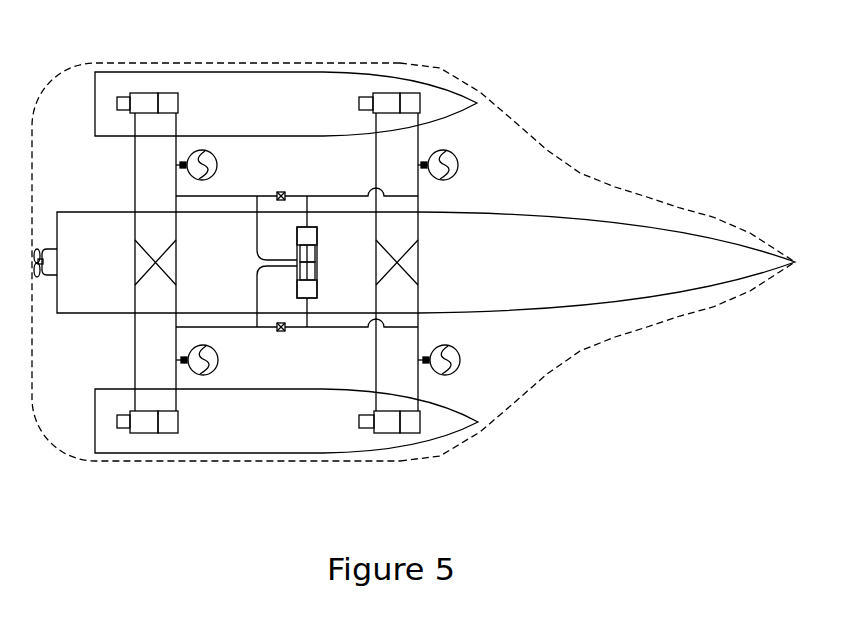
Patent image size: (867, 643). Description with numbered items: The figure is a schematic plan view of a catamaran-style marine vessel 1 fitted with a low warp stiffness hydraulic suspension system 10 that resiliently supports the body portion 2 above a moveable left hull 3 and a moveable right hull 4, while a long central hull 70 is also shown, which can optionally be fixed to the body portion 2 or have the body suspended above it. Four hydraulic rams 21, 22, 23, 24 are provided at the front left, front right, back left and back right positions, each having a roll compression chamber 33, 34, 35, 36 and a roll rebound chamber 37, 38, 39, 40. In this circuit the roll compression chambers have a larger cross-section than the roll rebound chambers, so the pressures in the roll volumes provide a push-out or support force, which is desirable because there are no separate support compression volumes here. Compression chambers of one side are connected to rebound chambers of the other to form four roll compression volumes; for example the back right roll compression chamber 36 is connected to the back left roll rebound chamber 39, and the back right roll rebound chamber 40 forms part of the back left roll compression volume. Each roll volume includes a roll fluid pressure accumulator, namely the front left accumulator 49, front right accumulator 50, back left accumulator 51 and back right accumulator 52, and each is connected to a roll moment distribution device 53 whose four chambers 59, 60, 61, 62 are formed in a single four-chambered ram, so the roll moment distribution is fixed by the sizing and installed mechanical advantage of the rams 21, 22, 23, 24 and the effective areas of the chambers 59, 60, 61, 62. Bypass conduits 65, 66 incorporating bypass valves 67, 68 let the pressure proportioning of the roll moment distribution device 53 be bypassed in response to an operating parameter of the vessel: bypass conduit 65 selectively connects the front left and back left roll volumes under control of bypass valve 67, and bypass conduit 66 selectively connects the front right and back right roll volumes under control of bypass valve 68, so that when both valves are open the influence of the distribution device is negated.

The marine vessel 1 is at (714, 109).
The body portion 2 is at (548, 148).
The left hull 3 is at (255, 80).
The right hull 4 is at (255, 445).
The hydraulic suspension system 10 is at (486, 391).
The front left ram 21 is at (374, 69).
The front right ram 22 is at (372, 457).
The back left ram 23 is at (109, 71).
The back right ram 24 is at (109, 458).
The roll compression chamber 33 is at (410, 93).
The roll compression chamber 34 is at (411, 434).
The roll compression chamber 35 is at (165, 93).
The roll compression chamber 36 is at (168, 434).
The roll rebound chamber 37 is at (390, 93).
The roll rebound chamber 38 is at (388, 434).
The roll rebound chamber 39 is at (145, 93).
The roll rebound chamber 40 is at (142, 434).
The front left roll fluid pressure accumulator 49 is at (455, 180).
The front right roll fluid pressure accumulator 50 is at (454, 344).
The back left roll fluid pressure accumulator 51 is at (217, 158).
The back right roll fluid pressure accumulator 52 is at (216, 370).
The roll moment distribution device 53 is at (315, 244).
The chamber 59 is at (316, 236).
The chamber 60 is at (313, 289).
The chamber 61 is at (297, 253).
The chamber 62 is at (297, 271).
The bypass conduit 65 is at (296, 195).
The bypass conduit 66 is at (295, 331).
The bypass valve 67 is at (277, 193).
The bypass valve 68 is at (277, 333).
The central hull 70 is at (673, 288).